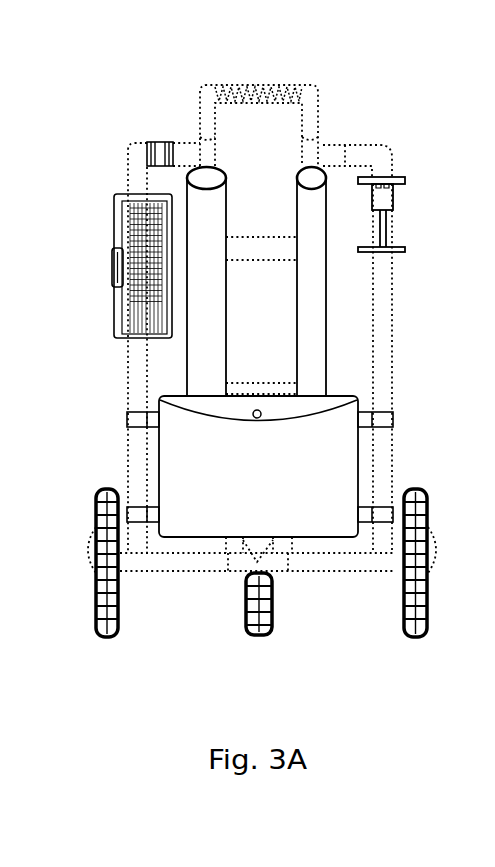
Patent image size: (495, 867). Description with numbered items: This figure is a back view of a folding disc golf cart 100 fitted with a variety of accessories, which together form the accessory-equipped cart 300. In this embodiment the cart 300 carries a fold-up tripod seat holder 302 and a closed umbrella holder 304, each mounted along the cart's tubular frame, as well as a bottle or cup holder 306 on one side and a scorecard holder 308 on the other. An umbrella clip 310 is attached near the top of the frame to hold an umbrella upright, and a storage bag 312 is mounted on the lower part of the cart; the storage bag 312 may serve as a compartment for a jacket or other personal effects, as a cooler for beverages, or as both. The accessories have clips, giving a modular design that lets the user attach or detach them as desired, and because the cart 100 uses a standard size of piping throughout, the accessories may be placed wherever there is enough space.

The accessory-equipped cart 300 is at (82, 128).
The cart 100 is at (282, 124).
The fold-up tripod seat holder 302 is at (145, 281).
The closed umbrella holder 304 is at (367, 281).
The bottle or cup holder 306 is at (417, 214).
The scorecard holder 308 is at (108, 251).
The umbrella clip 310 is at (166, 129).
The storage bag 312 is at (306, 454).